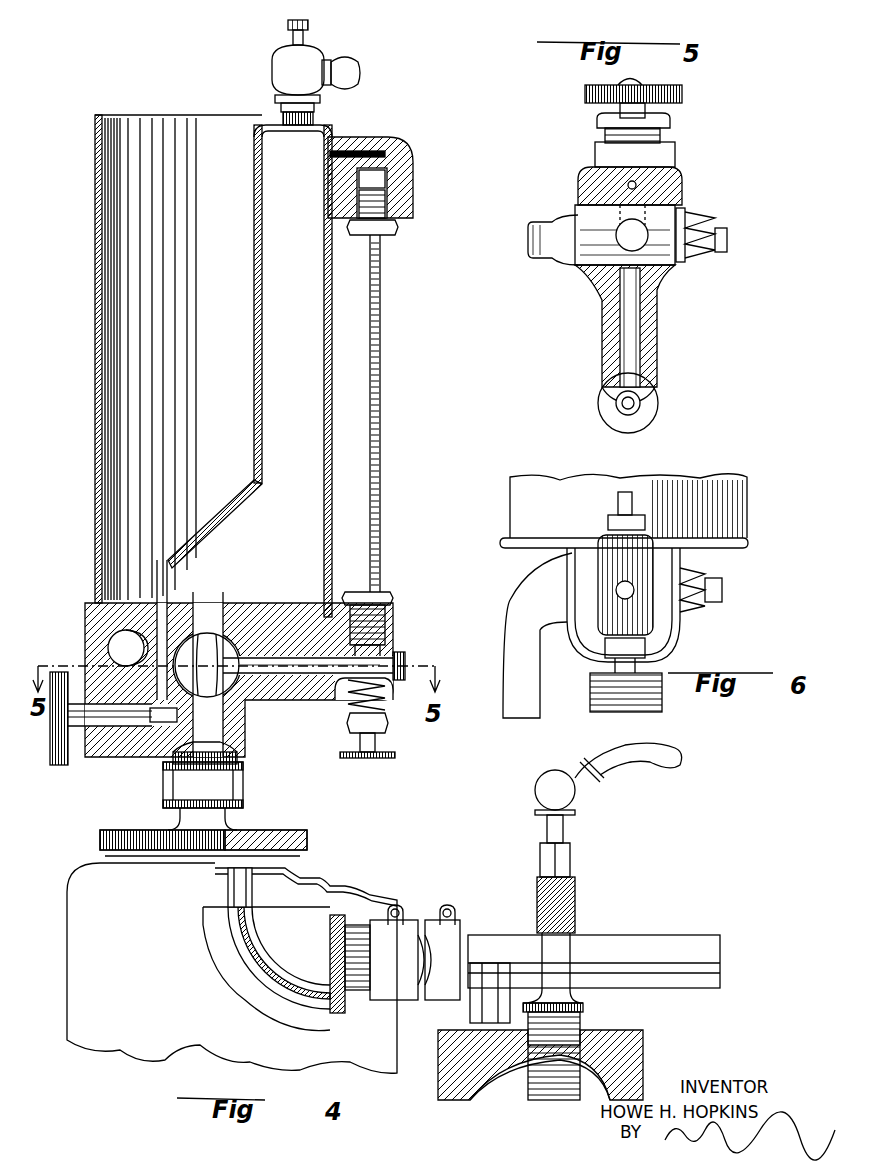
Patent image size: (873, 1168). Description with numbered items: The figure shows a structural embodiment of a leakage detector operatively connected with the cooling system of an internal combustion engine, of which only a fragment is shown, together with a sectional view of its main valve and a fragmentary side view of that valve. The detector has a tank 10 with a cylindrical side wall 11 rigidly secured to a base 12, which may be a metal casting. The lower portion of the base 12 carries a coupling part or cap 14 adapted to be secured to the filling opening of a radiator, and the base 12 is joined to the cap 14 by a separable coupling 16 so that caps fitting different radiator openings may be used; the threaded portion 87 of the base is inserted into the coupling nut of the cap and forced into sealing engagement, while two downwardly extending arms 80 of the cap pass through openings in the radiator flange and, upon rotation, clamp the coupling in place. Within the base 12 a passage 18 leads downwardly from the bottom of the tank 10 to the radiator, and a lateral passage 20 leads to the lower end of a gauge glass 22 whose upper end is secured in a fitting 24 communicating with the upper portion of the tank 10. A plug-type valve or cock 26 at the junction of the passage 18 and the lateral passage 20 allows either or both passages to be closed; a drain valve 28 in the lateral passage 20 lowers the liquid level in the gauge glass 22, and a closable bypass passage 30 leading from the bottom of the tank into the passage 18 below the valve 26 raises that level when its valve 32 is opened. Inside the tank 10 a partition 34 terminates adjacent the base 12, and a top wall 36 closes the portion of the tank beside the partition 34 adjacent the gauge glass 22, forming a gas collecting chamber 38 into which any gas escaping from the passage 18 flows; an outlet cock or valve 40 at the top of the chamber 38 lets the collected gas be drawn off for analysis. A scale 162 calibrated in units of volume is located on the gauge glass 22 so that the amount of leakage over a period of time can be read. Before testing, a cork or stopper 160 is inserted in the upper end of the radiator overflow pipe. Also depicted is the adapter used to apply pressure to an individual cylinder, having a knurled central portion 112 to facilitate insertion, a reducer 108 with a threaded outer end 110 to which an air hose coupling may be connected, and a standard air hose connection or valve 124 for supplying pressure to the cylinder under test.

In FIG. 4, the tank 10 is at (171, 110).
In FIG. 4, the side wall 11 is at (95, 355).
In FIG. 6, the side wall 11 is at (745, 505).
In FIG. 4, the base 12 is at (115, 640).
In FIG. 5, the base 12 is at (578, 180).
In FIG. 6, the base 12 is at (680, 562).
In FIG. 4, the coupling part or cap 14 is at (307, 840).
In FIG. 4, the separable coupling 16 is at (243, 788).
In FIG. 4, the passage 18 is at (213, 610).
In FIG. 5, the passage 18 is at (640, 255).
In FIG. 4, the lateral passage 20 is at (320, 675).
In FIG. 5, the lateral passage 20 is at (640, 350).
In FIG. 6, the lateral passage 20 is at (630, 595).
In FIG. 4, the gauge glass 22 is at (381, 548).
In FIG. 6, the gauge glass 22 is at (618, 506).
In FIG. 4, the fitting 24 is at (413, 155).
In FIG. 4, the valve or cock 26 is at (235, 688).
In FIG. 5, the valve or cock 26 is at (578, 262).
In FIG. 6, the valve or cock 26 is at (558, 568).
In FIG. 4, the drain valve or cock 28 is at (385, 730).
In FIG. 5, the drain valve or cock 28 is at (642, 405).
In FIG. 6, the drain valve or cock 28 is at (598, 668).
In FIG. 4, the bypass passage 30 is at (165, 600).
In FIG. 5, the bypass passage 30 is at (636, 185).
In FIG. 4, the valve 32 is at (160, 735).
In FIG. 5, the valve 32 is at (682, 99).
In FIG. 4, the partition 34 is at (254, 358).
In FIG. 4, the top wall 36 is at (272, 130).
In FIG. 4, the gas collecting chamber 38 is at (286, 222).
In FIG. 4, the outlet cock or valve 40 is at (305, 58).
In FIG. 4, the downwardly extending arms 80 is at (300, 870).
In FIG. 4, the threaded portion 87 is at (237, 760).
In FIG. 6, the threaded portion 87 is at (655, 712).
In FIG. 4, the reducer 108 is at (572, 850).
In FIG. 4, the threaded outer end 110 is at (563, 828).
In FIG. 4, the central portion 112 is at (575, 895).
In FIG. 4, the air hose connection or valve 124 is at (575, 800).
In FIG. 4, the cork or stopper 160 is at (228, 880).
In FIG. 4, the scale 162 is at (381, 357).